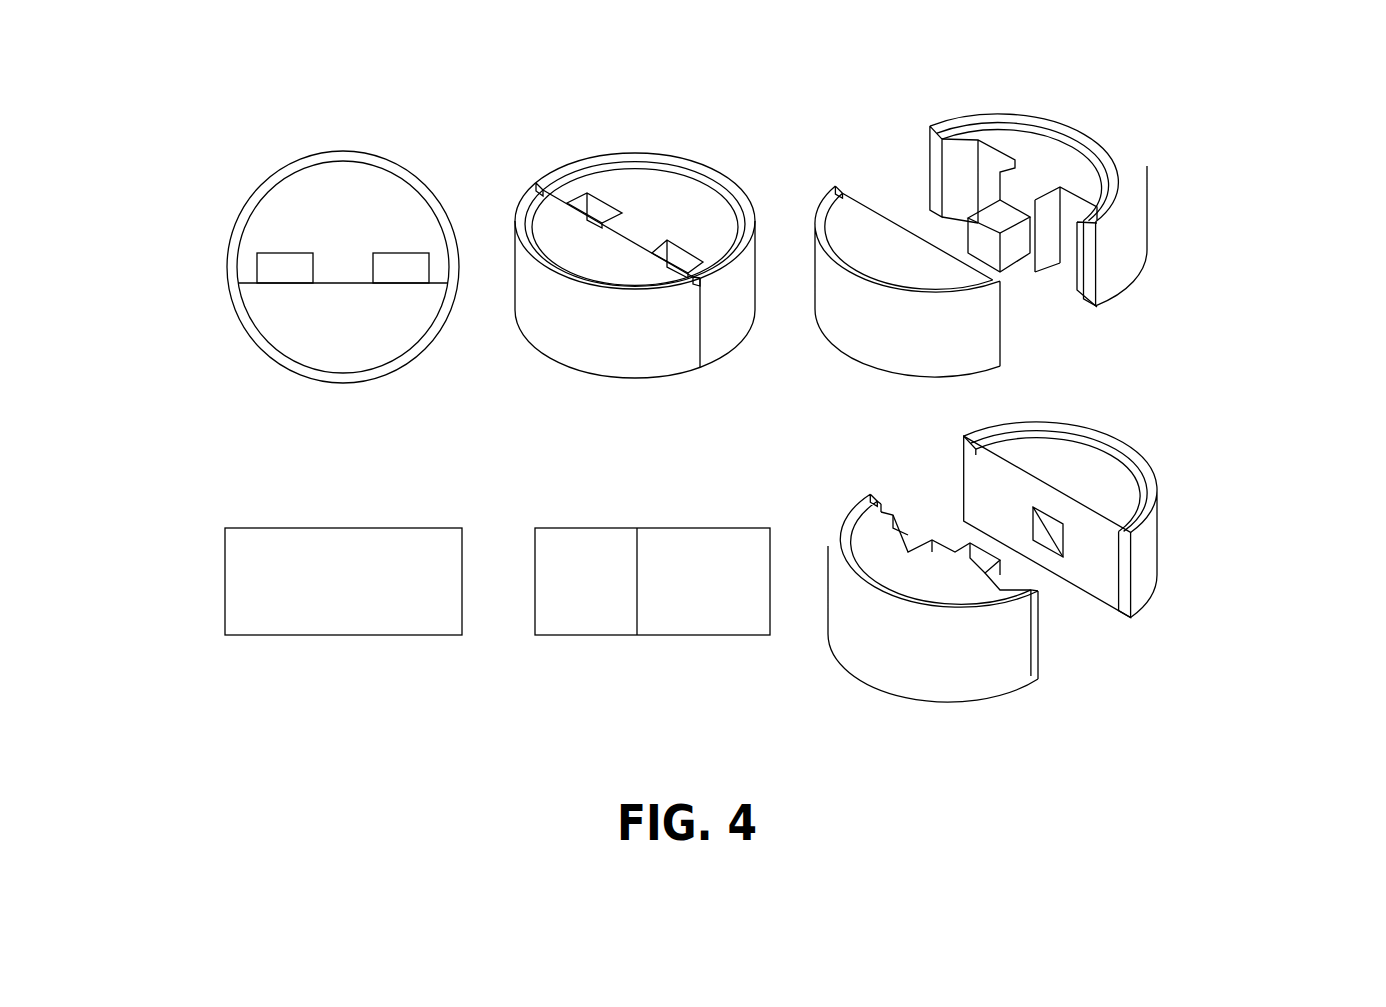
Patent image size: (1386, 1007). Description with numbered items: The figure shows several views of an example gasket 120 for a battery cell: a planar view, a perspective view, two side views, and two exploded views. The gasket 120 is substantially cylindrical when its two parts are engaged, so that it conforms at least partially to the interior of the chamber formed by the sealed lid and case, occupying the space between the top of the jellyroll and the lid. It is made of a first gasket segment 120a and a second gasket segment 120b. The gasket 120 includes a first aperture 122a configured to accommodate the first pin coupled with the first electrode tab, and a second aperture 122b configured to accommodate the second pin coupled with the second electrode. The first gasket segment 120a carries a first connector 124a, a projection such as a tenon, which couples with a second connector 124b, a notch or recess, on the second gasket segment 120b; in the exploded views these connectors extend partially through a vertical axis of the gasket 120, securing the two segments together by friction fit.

The gasket 120 is at (240, 138).
The first gasket segment 120a is at (285, 218).
The second gasket segment 120b is at (285, 315).
The first aperture 122a is at (273, 273).
The second aperture 122b is at (727, 147).
The first connector 124a is at (1010, 245).
The second connector 124b is at (1073, 530).